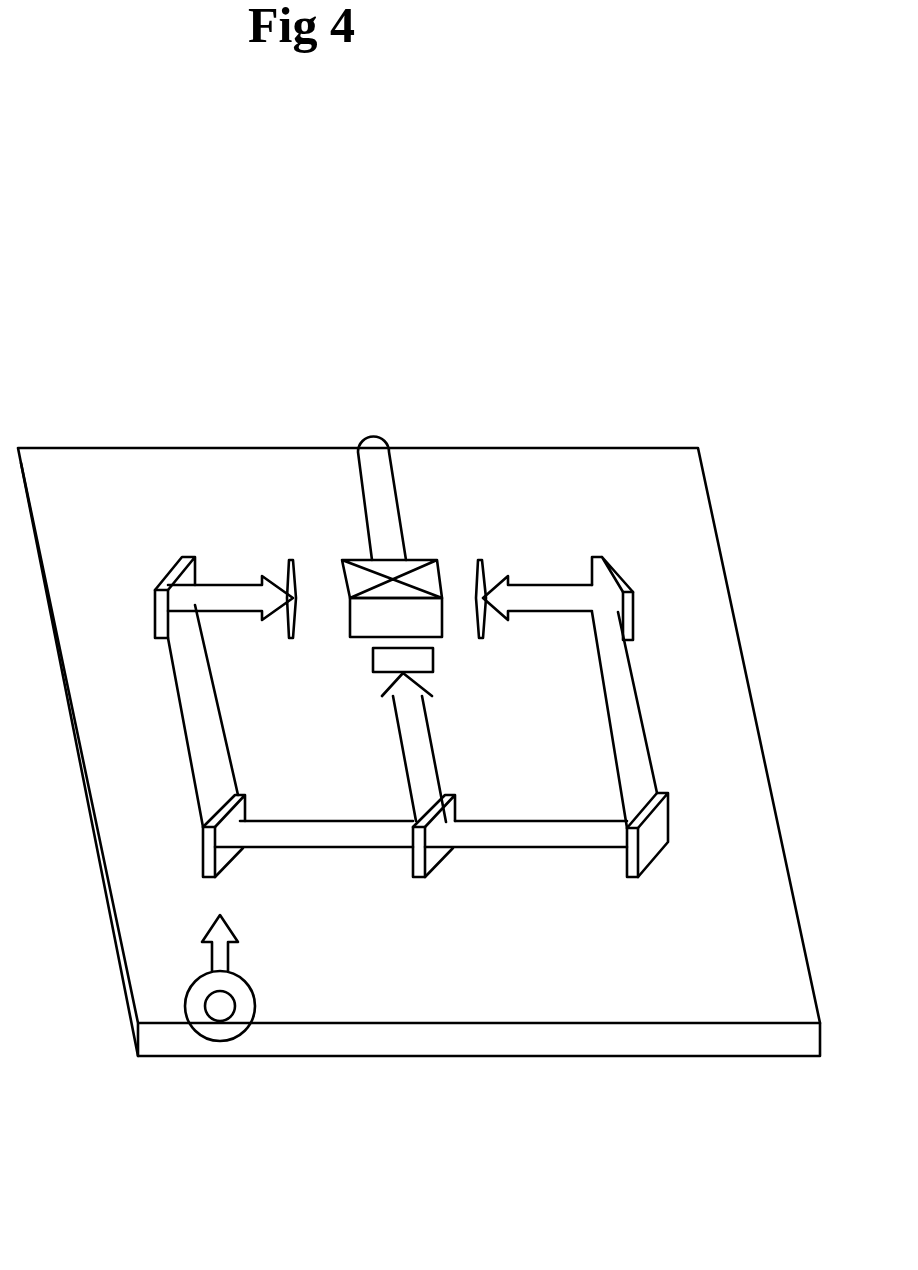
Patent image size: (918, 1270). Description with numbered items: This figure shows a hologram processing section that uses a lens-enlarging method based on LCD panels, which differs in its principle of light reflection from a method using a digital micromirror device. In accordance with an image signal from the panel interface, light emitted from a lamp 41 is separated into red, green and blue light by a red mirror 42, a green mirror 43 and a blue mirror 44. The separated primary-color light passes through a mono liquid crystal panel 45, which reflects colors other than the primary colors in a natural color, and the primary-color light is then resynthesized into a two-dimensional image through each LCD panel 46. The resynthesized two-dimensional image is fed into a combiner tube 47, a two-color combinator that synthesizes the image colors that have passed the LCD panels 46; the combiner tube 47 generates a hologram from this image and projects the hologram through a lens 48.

The lamp 41 is at (243, 1034).
The red mirror 42 is at (227, 862).
The green mirror 43 is at (435, 860).
The blue mirror 44 is at (642, 862).
The mono liquid crystal panel 45 is at (182, 557).
The LCD panel 46 is at (292, 640).
The combiner tube 47 is at (422, 560).
The lens 48 is at (378, 440).